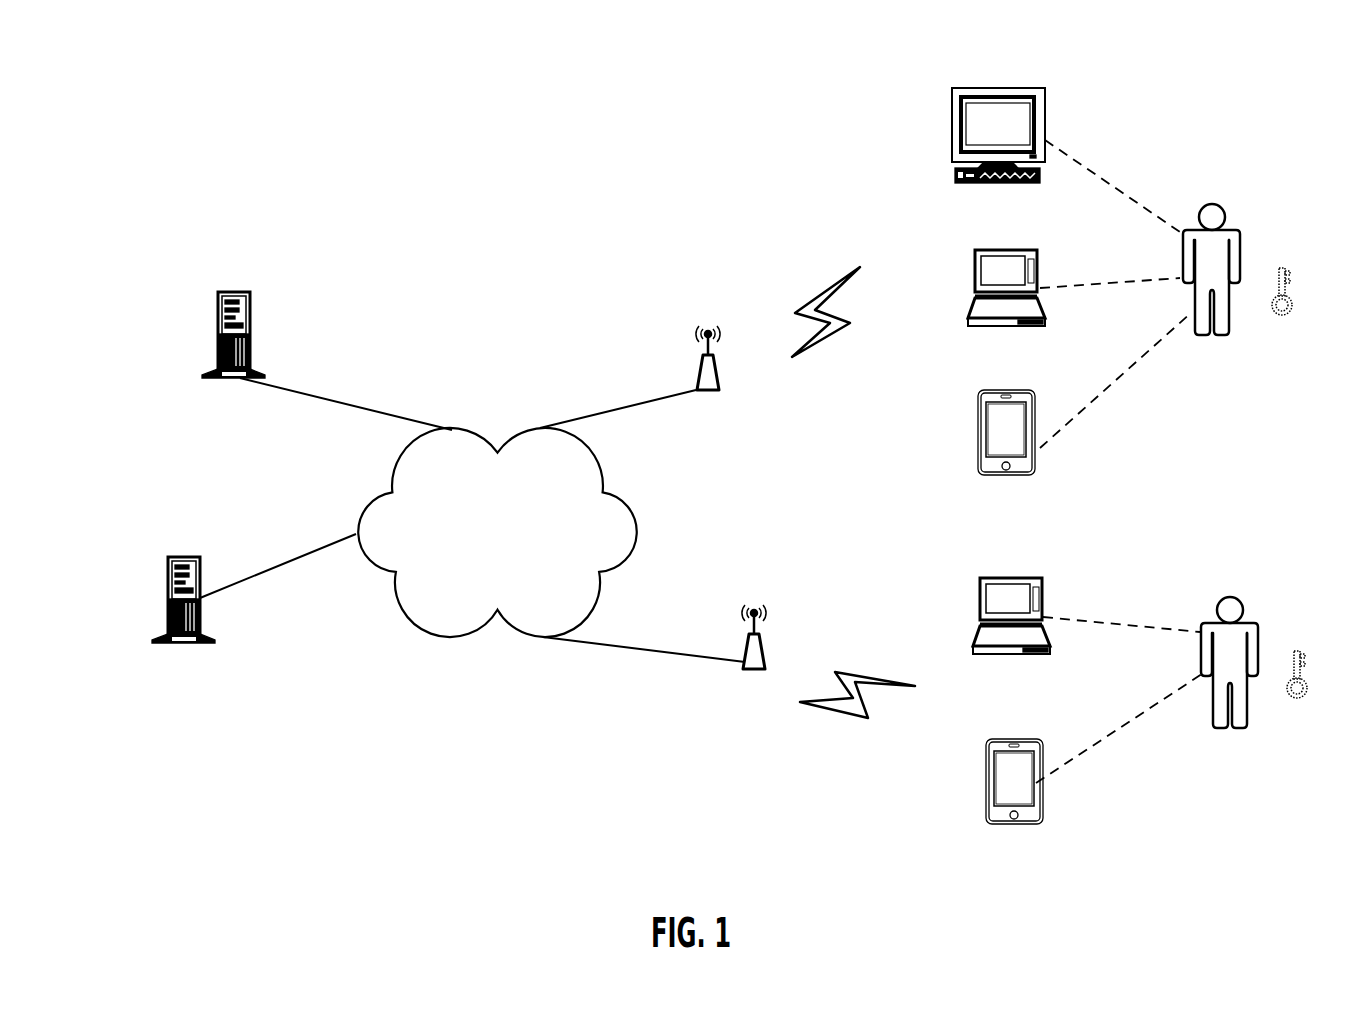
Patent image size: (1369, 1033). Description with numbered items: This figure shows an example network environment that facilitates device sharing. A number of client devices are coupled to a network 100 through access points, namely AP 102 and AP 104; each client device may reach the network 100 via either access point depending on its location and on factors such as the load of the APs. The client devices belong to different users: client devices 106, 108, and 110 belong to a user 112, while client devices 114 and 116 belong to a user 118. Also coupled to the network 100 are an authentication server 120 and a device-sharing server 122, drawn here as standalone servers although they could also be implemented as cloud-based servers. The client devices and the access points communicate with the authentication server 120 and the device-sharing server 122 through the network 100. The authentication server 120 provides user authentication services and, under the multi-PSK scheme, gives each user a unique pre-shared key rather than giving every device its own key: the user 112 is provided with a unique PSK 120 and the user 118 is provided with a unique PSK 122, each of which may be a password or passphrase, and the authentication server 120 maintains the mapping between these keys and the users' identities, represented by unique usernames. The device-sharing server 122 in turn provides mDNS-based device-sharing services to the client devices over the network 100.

The network 100 is at (497, 532).
The access point 102 is at (690, 370).
The access point 104 is at (755, 670).
The client device 106 is at (995, 115).
The client device 108 is at (1000, 268).
The client device 110 is at (995, 413).
The user 112 is at (1223, 245).
The client device 114 is at (1017, 578).
The client device 116 is at (1015, 824).
The user 118 is at (1253, 640).
The authentication server 120 is at (253, 332).
The device-sharing server 122 is at (181, 642).